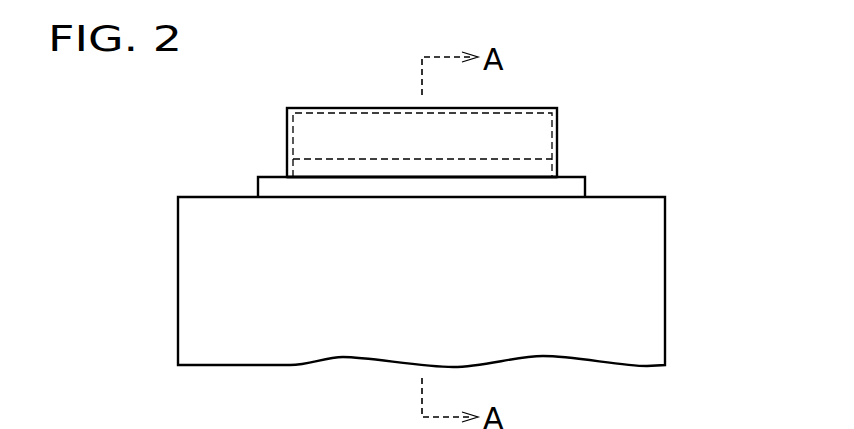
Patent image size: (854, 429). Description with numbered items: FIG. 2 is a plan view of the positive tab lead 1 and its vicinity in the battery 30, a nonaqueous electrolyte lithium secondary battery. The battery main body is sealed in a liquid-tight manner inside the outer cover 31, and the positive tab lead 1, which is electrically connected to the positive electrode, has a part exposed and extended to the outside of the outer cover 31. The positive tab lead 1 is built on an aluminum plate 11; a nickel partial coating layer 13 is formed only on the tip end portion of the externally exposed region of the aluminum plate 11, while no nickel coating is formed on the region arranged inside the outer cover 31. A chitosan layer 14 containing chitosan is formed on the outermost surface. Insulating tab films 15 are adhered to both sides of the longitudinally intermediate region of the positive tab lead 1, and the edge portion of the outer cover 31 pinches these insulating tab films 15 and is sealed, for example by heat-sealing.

The positive tab lead 1 is at (523, 125).
The aluminum plate 11 is at (300, 170).
The nickel partial coating layer 13 is at (313, 127).
The chitosan layer 14 is at (358, 128).
The insulating tab film 15 is at (267, 188).
The battery 30 is at (636, 129).
The outer cover 31 is at (210, 262).